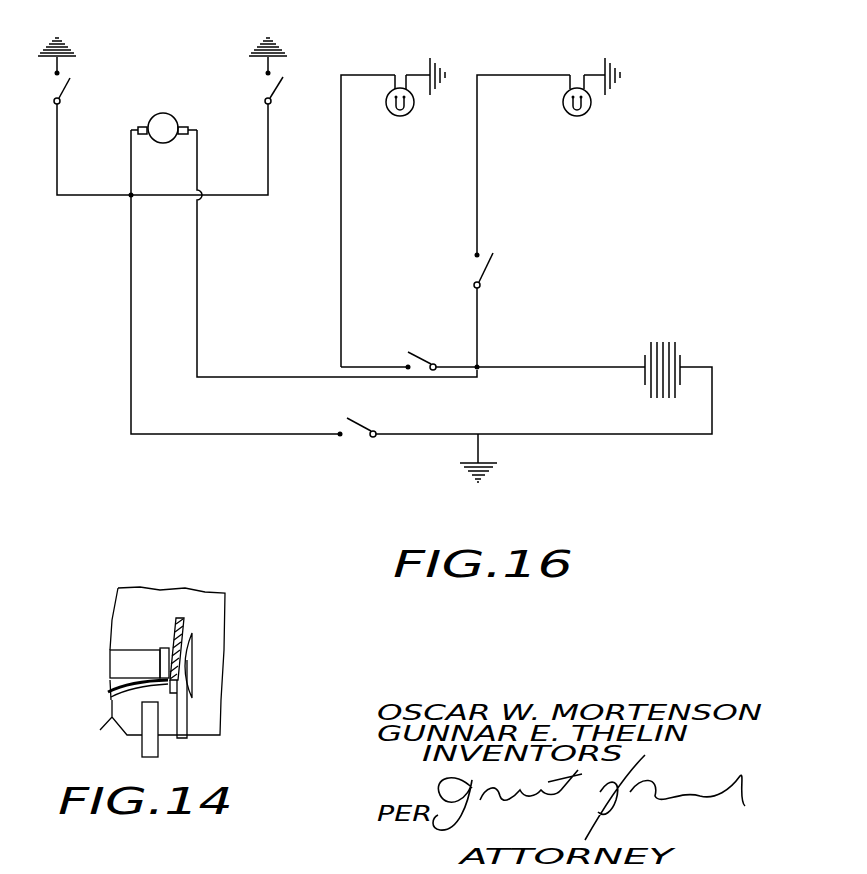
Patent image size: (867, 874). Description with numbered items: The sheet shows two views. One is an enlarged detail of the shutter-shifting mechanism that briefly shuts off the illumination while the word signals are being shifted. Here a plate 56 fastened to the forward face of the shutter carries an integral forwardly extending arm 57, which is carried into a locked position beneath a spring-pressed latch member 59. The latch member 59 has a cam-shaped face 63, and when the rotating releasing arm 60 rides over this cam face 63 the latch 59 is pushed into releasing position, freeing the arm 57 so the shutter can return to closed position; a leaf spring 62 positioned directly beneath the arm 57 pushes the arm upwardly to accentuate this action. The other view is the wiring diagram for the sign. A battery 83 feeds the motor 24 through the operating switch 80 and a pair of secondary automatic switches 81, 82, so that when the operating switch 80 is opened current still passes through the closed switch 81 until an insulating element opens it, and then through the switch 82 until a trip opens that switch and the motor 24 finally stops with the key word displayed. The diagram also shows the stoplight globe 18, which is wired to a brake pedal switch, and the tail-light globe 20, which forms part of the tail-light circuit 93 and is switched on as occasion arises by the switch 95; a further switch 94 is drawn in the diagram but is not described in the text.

In FIG. 16, the secondary automatic switch 81 is at (67, 88).
In FIG. 16, the secondary automatic switch 82 is at (274, 95).
In FIG. 16, the motor 24 is at (171, 114).
In FIG. 16, the globe 18 is at (408, 114).
In FIG. 16, the globe 20 is at (591, 107).
In FIG. 16, the tail-light circuit 93 is at (477, 130).
In FIG. 16, the switch 95 is at (481, 283).
In FIG. 16, the switch 94 is at (435, 362).
In FIG. 16, the battery 83 is at (681, 350).
In FIG. 16, the operating switch 80 is at (364, 425).
In FIG. 14, the plate 56 is at (125, 668).
In FIG. 14, the arm 57 is at (165, 663).
In FIG. 14, the releasing arm 60 is at (181, 620).
In FIG. 14, the cam-shaped face 63 is at (187, 665).
In FIG. 14, the leaf spring 62 is at (110, 693).
In FIG. 14, the spring-pressed latch member 59 is at (152, 745).